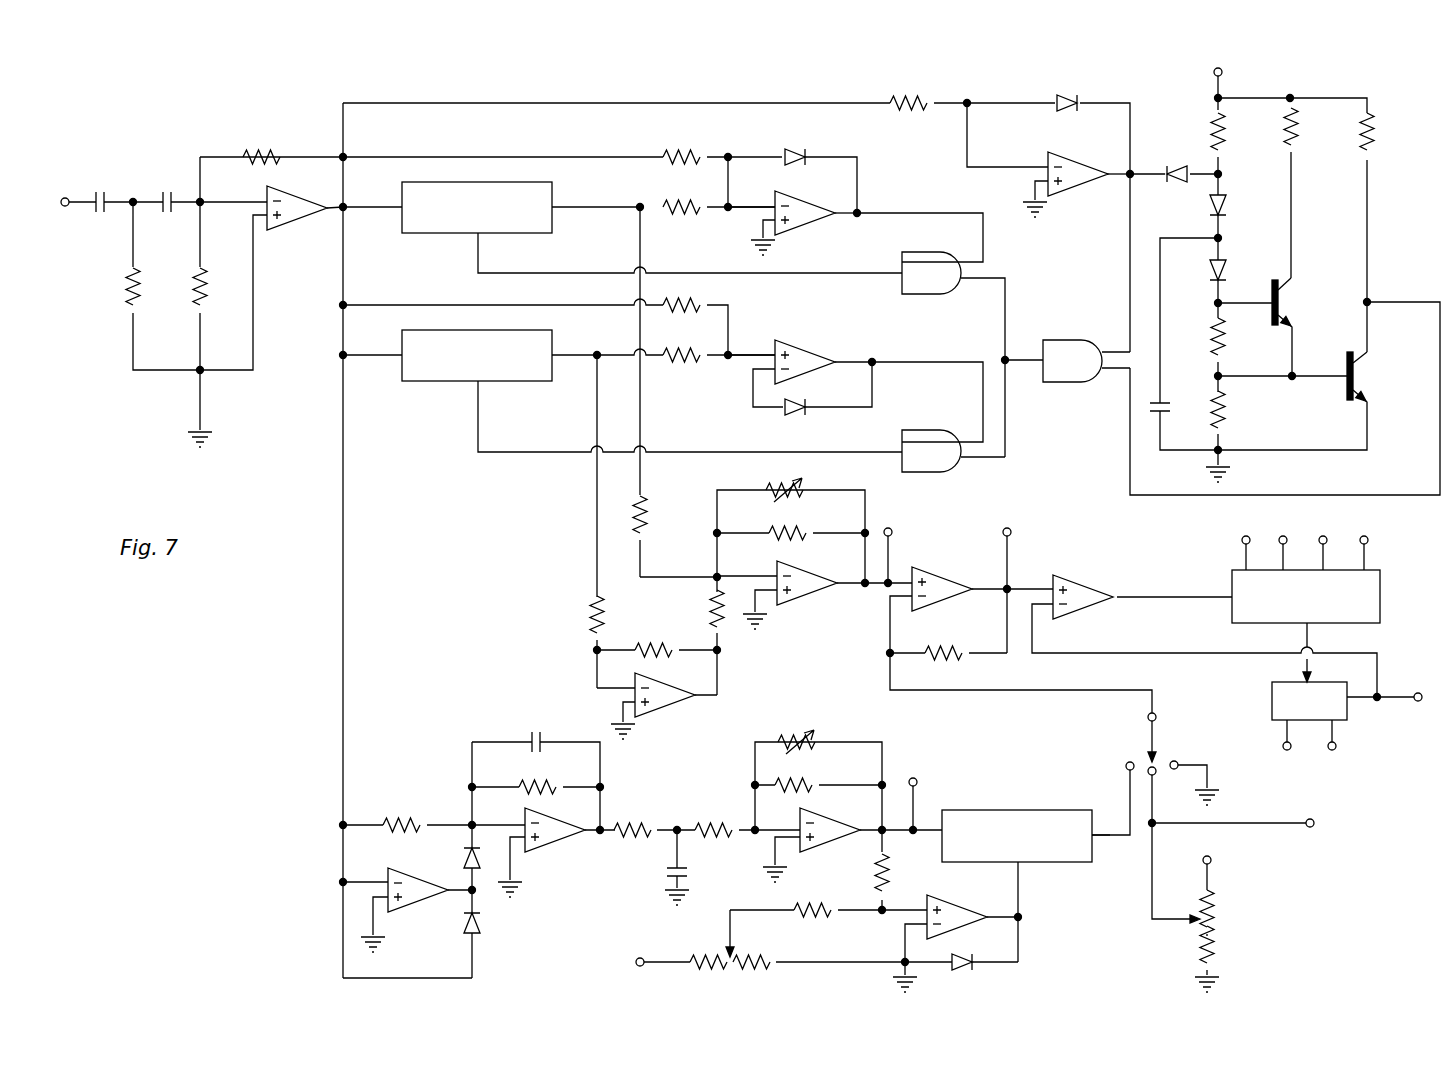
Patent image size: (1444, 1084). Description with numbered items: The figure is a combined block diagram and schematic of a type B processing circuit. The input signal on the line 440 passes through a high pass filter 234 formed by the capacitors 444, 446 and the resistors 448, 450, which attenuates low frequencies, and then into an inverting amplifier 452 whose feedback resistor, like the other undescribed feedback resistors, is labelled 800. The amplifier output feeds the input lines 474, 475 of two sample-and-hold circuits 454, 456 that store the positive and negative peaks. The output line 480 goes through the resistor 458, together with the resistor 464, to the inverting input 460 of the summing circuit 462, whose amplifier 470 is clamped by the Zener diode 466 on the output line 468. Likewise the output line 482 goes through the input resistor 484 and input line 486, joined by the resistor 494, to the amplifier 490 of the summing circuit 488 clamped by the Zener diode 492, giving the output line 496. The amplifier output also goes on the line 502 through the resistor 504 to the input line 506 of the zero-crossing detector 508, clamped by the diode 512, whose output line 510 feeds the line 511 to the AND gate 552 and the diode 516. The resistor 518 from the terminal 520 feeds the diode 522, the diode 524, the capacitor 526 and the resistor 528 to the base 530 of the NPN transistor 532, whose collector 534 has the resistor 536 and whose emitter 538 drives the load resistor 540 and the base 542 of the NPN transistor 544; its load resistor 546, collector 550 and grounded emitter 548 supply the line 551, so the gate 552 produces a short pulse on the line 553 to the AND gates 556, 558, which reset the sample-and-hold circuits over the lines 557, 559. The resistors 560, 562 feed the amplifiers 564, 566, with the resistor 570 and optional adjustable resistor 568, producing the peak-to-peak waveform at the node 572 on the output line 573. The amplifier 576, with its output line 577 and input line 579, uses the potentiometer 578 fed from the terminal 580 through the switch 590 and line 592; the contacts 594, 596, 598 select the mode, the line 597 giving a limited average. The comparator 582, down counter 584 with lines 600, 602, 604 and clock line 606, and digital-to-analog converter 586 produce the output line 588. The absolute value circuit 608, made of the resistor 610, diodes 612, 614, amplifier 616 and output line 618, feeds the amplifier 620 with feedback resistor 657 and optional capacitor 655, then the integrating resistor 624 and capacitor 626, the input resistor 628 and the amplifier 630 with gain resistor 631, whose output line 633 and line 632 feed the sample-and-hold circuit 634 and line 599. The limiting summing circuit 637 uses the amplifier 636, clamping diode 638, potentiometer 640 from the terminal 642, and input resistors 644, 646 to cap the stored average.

The high pass filter 234 is at (125, 155).
The input line 440 is at (70, 206).
The capacitor 444 is at (98, 190).
The capacitor 446 is at (166, 190).
The resistor 448 is at (130, 295).
The resistor 450 is at (196, 280).
The inverting amplifier 452 is at (300, 225).
The feedback resistor 800 is at (262, 152).
The line 502 is at (415, 103).
The resistor 504 is at (893, 100).
The input line 474 is at (400, 205).
The sample-and-hold circuit 454 is at (432, 235).
The input line 475 is at (400, 353).
The sample-and-hold circuit 456 is at (440, 385).
The output line 480 is at (585, 205).
The output line 482 is at (600, 352).
The line 557 is at (578, 260).
The line 559 is at (525, 452).
The resistor 464 is at (680, 150).
The resistor 458 is at (683, 198).
The diode 466 is at (790, 147).
The inverting input 460 is at (770, 205).
The amplifier 470 is at (822, 192).
The summing circuit 462 is at (790, 232).
The output line 468 is at (852, 218).
The resistor 494 is at (705, 300).
The input resistor 484 is at (690, 362).
The input line 486 is at (772, 352).
The summing circuit 488 is at (803, 343).
The amplifier 490 is at (805, 365).
The Zener diode 492 is at (795, 418).
The output line 496 is at (868, 358).
The AND gate 556 is at (950, 290).
The AND gate 558 is at (948, 470).
The line 553 is at (1020, 356).
The AND gate 552 is at (1085, 385).
The line 511 is at (1128, 292).
The line 551 is at (1128, 468).
The input line 506 is at (1040, 162).
The clamping diode 512 is at (1068, 93).
The zero-crossing detector 508 is at (1082, 190).
The output line 510 is at (1112, 170).
The diode 516 is at (1170, 165).
The terminal 520 is at (1213, 80).
The resistor 518 is at (1215, 120).
The diode 522 is at (1228, 205).
The diode 524 is at (1228, 268).
The resistor 528 is at (1212, 325).
The load resistor 540 is at (1228, 408).
The capacitor 526 is at (1170, 405).
The resistor 536 is at (1318, 150).
The base 530 is at (1270, 300).
The collector 534 is at (1293, 283).
The emitter 538 is at (1289, 318).
The NPN transistor 532 is at (1302, 305).
The load resistor 546 is at (1370, 128).
The base 542 is at (1340, 372).
The collector 550 is at (1360, 358).
The NPN transistor 544 is at (1368, 383).
The emitter 548 is at (1365, 400).
The resistor 560 is at (645, 515).
The adjustable resistor 568 is at (765, 488).
The resistor 562 is at (590, 605).
The resistor 570 is at (722, 635).
The amplifier 566 is at (672, 703).
The amplifier 564 is at (808, 592).
The output node 572 is at (863, 580).
The output line 573 is at (890, 555).
The amplifier 576 is at (945, 588).
The input line 579 is at (1003, 585).
The output line 577 is at (1012, 553).
The line 592 is at (960, 690).
The comparator 582 is at (1090, 585).
The down counter 584 is at (1380, 593).
The line 600 is at (1243, 550).
The line 602 is at (1280, 548).
The line 604 is at (1327, 548).
The clock input line 606 is at (1368, 548).
The digital-to-analog converter 586 is at (1348, 705).
The output line 588 is at (1398, 693).
The switch 590 is at (1135, 735).
The contact 596 is at (1158, 768).
The contact 594 is at (1193, 762).
The contact 598 is at (1126, 768).
The line 599 is at (1108, 838).
The line 597 is at (1245, 822).
The terminal 580 is at (1212, 872).
The potentiometer 578 is at (1215, 935).
The absolute value circuit 608 is at (408, 772).
The resistor 610 is at (405, 816).
The diode 612 is at (460, 862).
The diode 614 is at (480, 925).
The output line 618 is at (460, 885).
The amplifier 616 is at (430, 905).
The capacitor 655 is at (540, 730).
The feedback resistor 657 is at (535, 782).
The amplifier 620 is at (560, 850).
The resistor 624 is at (628, 822).
The capacitor 626 is at (665, 872).
The input resistor 628 is at (713, 822).
The feedback gain adjustment resistor 631 is at (790, 732).
The amplifier 630 is at (825, 822).
The line 632 is at (875, 828).
The output line 633 is at (915, 795).
The sample-and-hold circuit 634 is at (990, 808).
The input resistor 646 is at (885, 880).
The input resistor 644 is at (828, 893).
The amplifier 636 is at (990, 880).
The limiting summing circuit 637 is at (1030, 925).
The clamping diode 638 is at (970, 968).
The terminal 642 is at (645, 958).
The potentiometer 640 is at (730, 968).